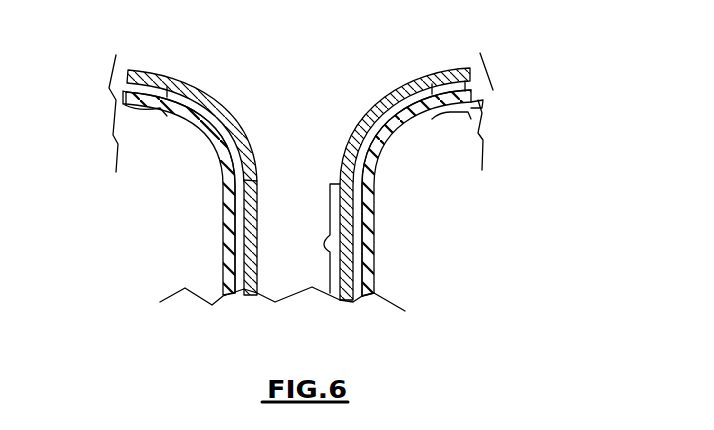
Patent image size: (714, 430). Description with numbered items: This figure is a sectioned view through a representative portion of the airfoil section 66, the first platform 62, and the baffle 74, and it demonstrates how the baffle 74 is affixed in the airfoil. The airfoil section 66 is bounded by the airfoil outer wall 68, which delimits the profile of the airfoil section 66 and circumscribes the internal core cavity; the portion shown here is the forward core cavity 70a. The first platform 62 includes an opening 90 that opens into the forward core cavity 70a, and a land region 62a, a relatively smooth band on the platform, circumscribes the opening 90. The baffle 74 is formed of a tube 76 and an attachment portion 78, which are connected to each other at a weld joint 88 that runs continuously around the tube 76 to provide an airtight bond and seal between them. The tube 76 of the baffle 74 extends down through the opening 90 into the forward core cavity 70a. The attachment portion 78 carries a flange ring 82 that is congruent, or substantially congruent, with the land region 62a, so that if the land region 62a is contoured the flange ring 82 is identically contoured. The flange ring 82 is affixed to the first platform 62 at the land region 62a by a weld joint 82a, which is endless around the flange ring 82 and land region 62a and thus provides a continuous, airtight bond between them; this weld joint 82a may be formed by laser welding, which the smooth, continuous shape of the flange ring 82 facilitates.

The first platform 62 is at (489, 92).
The land region 62a is at (145, 112).
The airfoil section 66 is at (386, 254).
The airfoil outer wall 68 is at (231, 208).
The forward core cavity 70a is at (258, 229).
The baffle 74 is at (364, 236).
The tube 76 is at (258, 229).
The attachment portion 78 is at (272, 136).
The flange ring 82 is at (147, 72).
The weld joint 82a is at (482, 82).
The weld joint 88 is at (257, 178).
The opening 90 is at (347, 90).